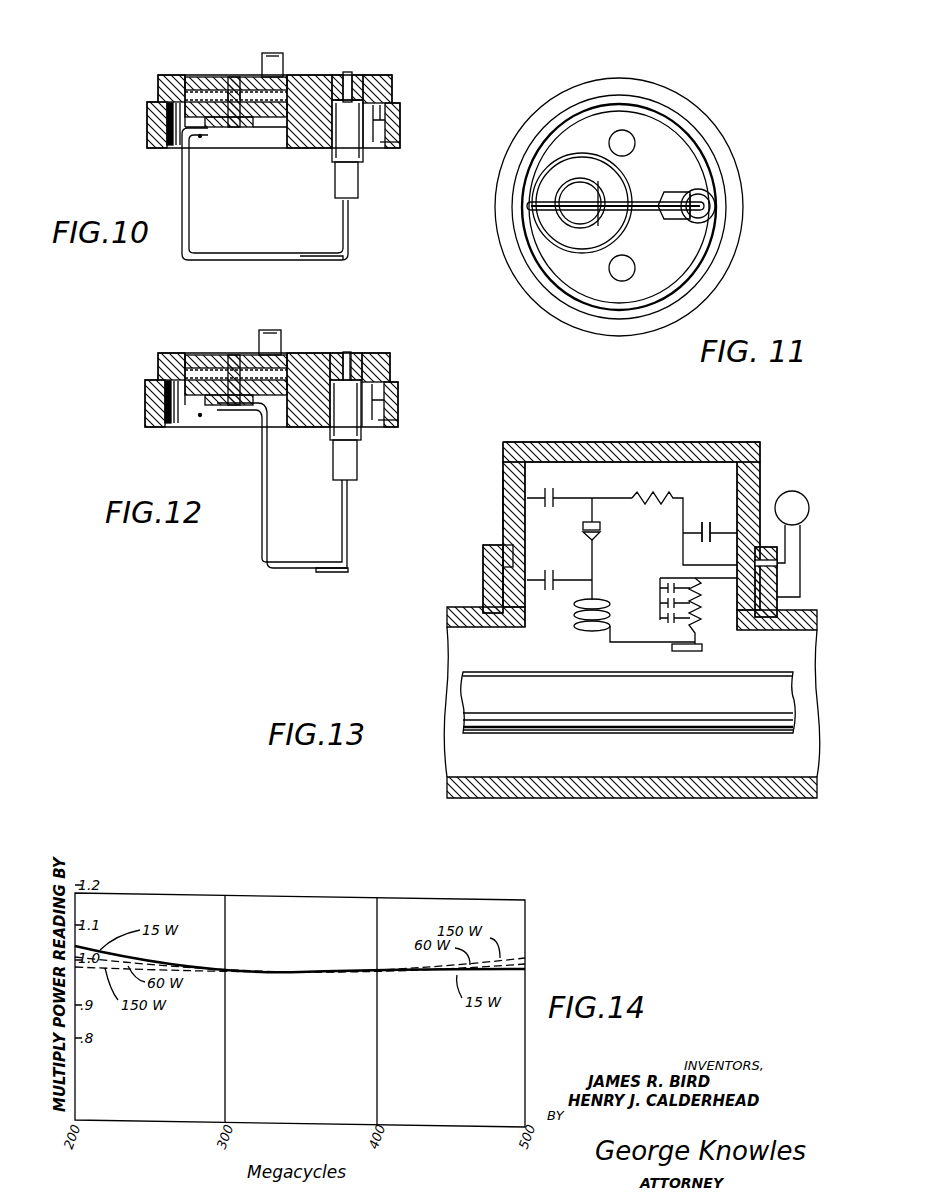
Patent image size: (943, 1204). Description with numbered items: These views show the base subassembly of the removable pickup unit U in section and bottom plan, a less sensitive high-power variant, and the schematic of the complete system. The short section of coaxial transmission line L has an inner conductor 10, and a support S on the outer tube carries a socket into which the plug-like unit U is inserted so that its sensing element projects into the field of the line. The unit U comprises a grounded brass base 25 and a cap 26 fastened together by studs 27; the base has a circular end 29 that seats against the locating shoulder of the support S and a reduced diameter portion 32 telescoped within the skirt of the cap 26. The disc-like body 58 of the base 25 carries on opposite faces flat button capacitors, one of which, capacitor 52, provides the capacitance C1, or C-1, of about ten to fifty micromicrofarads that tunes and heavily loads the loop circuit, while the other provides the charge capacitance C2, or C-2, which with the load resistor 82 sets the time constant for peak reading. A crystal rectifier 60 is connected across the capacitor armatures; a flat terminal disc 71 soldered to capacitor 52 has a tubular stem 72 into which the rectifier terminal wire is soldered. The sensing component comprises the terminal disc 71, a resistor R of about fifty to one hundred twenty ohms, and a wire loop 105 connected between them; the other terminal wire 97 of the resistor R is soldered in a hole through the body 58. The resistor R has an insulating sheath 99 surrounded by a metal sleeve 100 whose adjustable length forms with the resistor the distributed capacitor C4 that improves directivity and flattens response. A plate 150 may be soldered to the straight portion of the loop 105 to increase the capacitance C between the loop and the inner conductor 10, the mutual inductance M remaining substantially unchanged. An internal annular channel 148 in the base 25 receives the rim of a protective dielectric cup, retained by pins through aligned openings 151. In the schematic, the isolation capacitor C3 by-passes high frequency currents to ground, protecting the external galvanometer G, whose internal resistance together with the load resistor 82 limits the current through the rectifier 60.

In FIG. 13, the inner conductor 10 is at (557, 658).
In FIG. 10, the base 25 is at (400, 110).
In FIG. 12, the base 25 is at (398, 390).
In FIG. 11, the base 25 is at (728, 148).
In FIG. 13, the base 25 is at (525, 607).
In FIG. 13, the cap 26 is at (503, 497).
In FIG. 10, the studs 27 is at (283, 58).
In FIG. 12, the studs 27 is at (281, 335).
In FIG. 11, the studs 27 is at (635, 141).
In FIG. 11, the circular end of the base 29 is at (730, 258).
In FIG. 10, the reduced diameter portion 32 is at (392, 80).
In FIG. 12, the reduced diameter portion 32 is at (390, 358).
In FIG. 11, the button type capacitor 52 is at (556, 236).
In FIG. 11, the disc-like body of the base 58 is at (688, 268).
In FIG. 13, the crystal rectifier 60 is at (600, 526).
In FIG. 10, the terminal disc 71 is at (248, 125).
In FIG. 12, the terminal disc 71 is at (242, 400).
In FIG. 11, the terminal disc 71 is at (580, 188).
In FIG. 10, the tubular stem 72 is at (236, 77).
In FIG. 13, the load resistor 82 is at (655, 497).
In FIG. 10, the terminal wire 97 is at (352, 75).
In FIG. 12, the terminal wire 97 is at (351, 355).
In FIG. 10, the insulating sheath 99 is at (358, 192).
In FIG. 10, the metal sleeve 100 is at (332, 160).
In FIG. 12, the metal sleeve 100 is at (330, 438).
In FIG. 10, the wire loop 105 is at (262, 260).
In FIG. 12, the wire loop 105 is at (320, 560).
In FIG. 11, the wire loop 105 is at (640, 202).
In FIG. 10, the internal annular channel 148 is at (395, 140).
In FIG. 12, the internal annular channel 148 is at (393, 418).
In FIG. 11, the internal annular channel 148 is at (725, 202).
In FIG. 10, the plate 150 is at (337, 258).
In FIG. 12, the plate 150 is at (320, 572).
In FIG. 11, the plate 150 is at (675, 218).
In FIG. 13, the plate 150 is at (702, 650).
In FIG. 10, the openings 151 is at (200, 137).
In FIG. 12, the openings 151 is at (200, 416).
In FIG. 10, the capacitance C-1 is at (262, 120).
In FIG. 12, the capacitance C-1 is at (195, 400).
In FIG. 10, the capacitance C-2 is at (228, 80).
In FIG. 12, the capacitance C-2 is at (228, 358).
In FIG. 13, the capacitance C1 is at (559, 569).
In FIG. 13, the capacitance C2 is at (579, 489).
In FIG. 13, the isolation capacitor C3 is at (710, 521).
In FIG. 13, the modifying capacitor C4 is at (679, 600).
In FIG. 10, the resistor R is at (368, 170).
In FIG. 12, the resistor R is at (357, 460).
In FIG. 11, the resistor R is at (705, 197).
In FIG. 13, the resistor R is at (703, 611).
In FIG. 13, the pickup unit U is at (604, 433).
In FIG. 13, the support S is at (483, 573).
In FIG. 13, the galvanometer G is at (782, 554).
In FIG. 13, the mutual inductance M is at (628, 663).
In FIG. 13, the capacitance C is at (628, 690).
In FIG. 13, the transmission line L is at (663, 798).